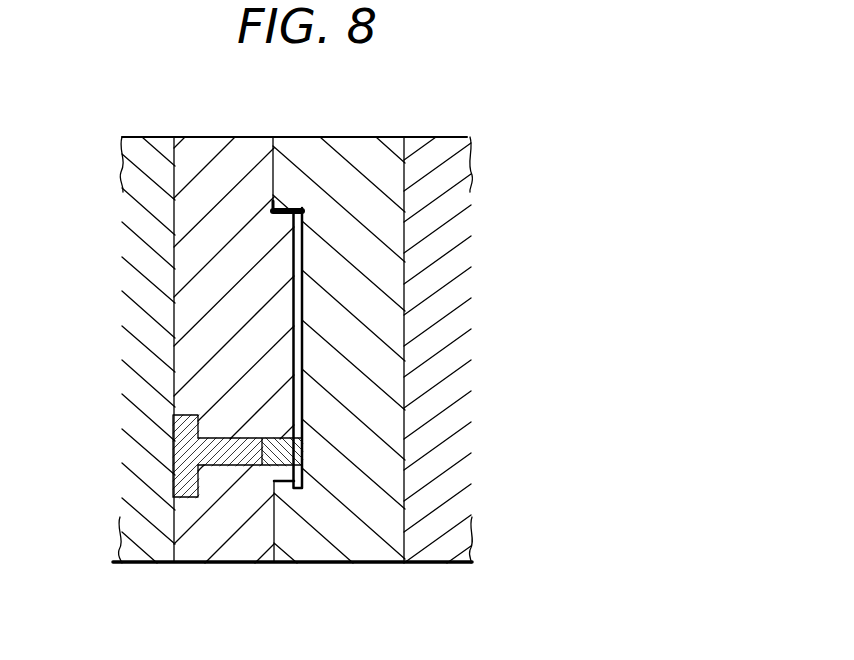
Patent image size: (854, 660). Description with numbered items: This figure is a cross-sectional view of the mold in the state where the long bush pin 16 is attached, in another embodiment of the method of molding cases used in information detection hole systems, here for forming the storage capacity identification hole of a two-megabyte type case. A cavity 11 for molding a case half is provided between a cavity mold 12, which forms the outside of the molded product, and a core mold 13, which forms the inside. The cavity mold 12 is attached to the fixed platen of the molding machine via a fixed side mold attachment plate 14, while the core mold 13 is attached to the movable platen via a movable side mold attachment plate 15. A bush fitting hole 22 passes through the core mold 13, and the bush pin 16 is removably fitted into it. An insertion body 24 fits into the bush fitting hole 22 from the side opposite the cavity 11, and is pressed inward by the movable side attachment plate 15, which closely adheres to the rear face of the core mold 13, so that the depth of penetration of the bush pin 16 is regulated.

The cavity 11 is at (300, 297).
The cavity mold 12 is at (322, 548).
The core mold 13 is at (232, 549).
The mold attachment plate (fixed side attachment plate) 14 is at (443, 548).
The mold attachment plate (movable side attachment plate) 15 is at (140, 543).
The bush pin 16 is at (303, 450).
The bush fitting hole 22 is at (305, 458).
The insertion body 24 is at (175, 466).